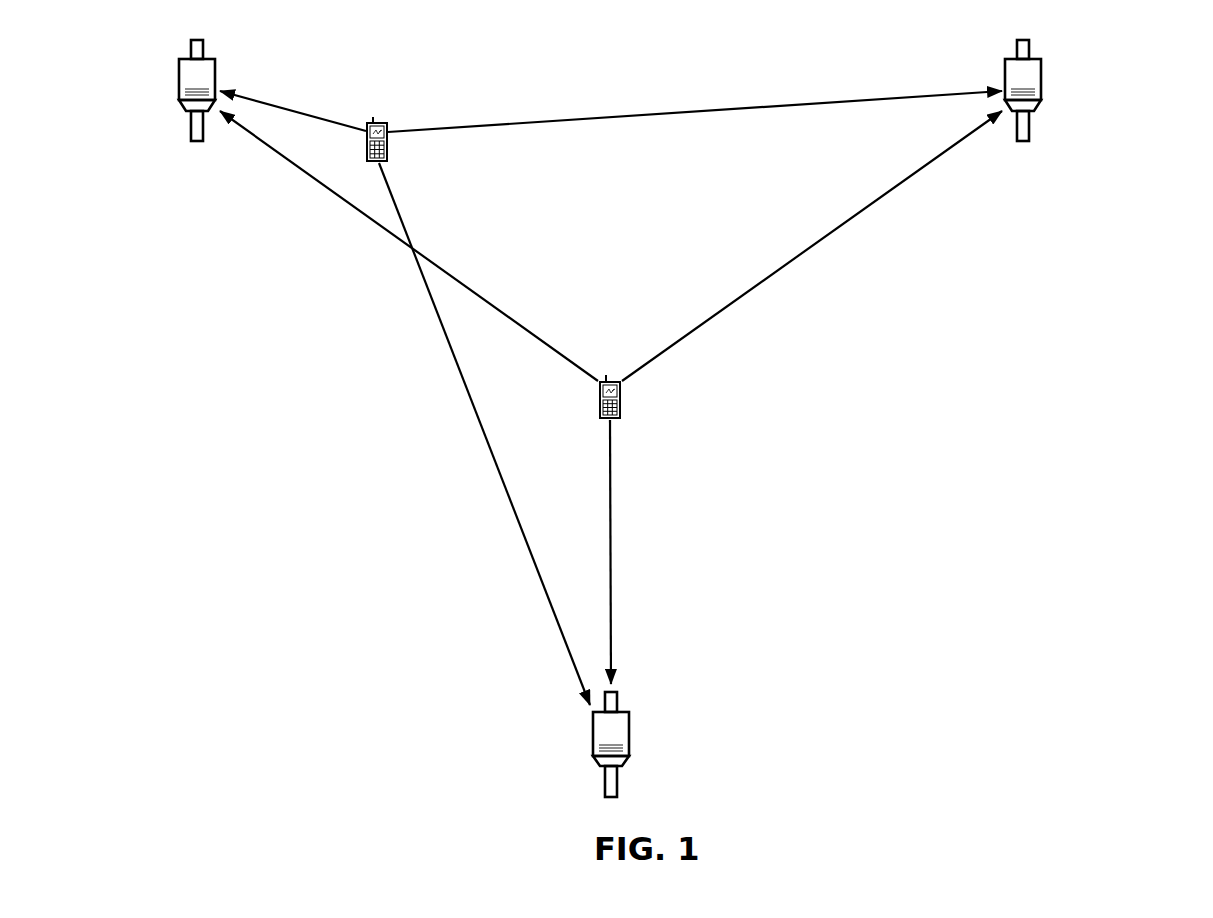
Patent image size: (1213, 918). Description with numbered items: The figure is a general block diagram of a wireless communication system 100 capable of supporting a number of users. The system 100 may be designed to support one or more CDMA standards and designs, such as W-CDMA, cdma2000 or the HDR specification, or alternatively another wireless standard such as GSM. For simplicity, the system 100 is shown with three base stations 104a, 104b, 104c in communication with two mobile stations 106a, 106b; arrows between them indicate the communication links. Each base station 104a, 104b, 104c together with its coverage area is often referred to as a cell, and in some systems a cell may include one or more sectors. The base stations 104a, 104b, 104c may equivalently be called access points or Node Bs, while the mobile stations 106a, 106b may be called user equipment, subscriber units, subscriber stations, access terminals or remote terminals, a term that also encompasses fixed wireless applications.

The wireless communication system 100 is at (1158, 263).
The base station 104a is at (207, 58).
The base station 104b is at (1032, 58).
The base station 104c is at (621, 711).
The mobile station 106a is at (382, 121).
The mobile station 106b is at (607, 420).